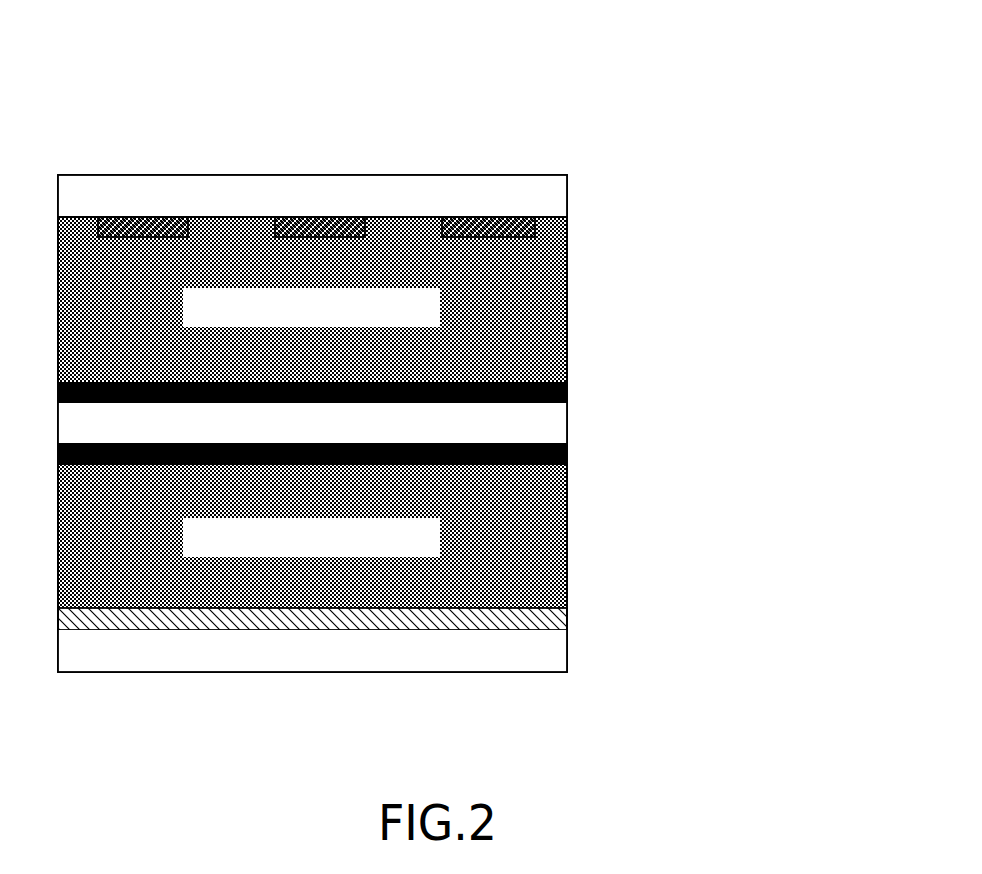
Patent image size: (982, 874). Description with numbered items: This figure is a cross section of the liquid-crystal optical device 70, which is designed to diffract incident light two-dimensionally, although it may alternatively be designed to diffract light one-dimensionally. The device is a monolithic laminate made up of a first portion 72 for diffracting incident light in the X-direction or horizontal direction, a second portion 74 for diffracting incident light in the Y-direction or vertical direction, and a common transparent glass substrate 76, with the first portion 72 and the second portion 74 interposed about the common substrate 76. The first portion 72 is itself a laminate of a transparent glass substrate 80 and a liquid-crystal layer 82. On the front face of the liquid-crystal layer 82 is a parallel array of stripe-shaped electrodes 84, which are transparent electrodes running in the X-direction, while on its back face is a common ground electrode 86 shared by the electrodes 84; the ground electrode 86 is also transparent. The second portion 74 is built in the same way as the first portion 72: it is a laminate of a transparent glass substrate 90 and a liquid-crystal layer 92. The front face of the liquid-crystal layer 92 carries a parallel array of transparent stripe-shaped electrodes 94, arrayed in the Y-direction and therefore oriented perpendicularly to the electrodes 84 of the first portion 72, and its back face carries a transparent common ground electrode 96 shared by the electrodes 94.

The liquid-crystal optical device 70 is at (565, 62).
The first portion 72 is at (747, 288).
The second portion 74 is at (728, 542).
The common transparent glass substrate 76 is at (542, 424).
The transparent glass substrate 80 is at (495, 192).
The liquid-crystal layer 82 is at (532, 320).
The stripe-shaped electrodes 84 is at (152, 223).
The common ground electrode 86 is at (532, 392).
The transparent glass substrate 90 is at (501, 660).
The liquid-crystal layer 92 is at (532, 547).
The stripe-shaped electrodes 94 is at (522, 617).
The common ground electrode 96 is at (540, 457).